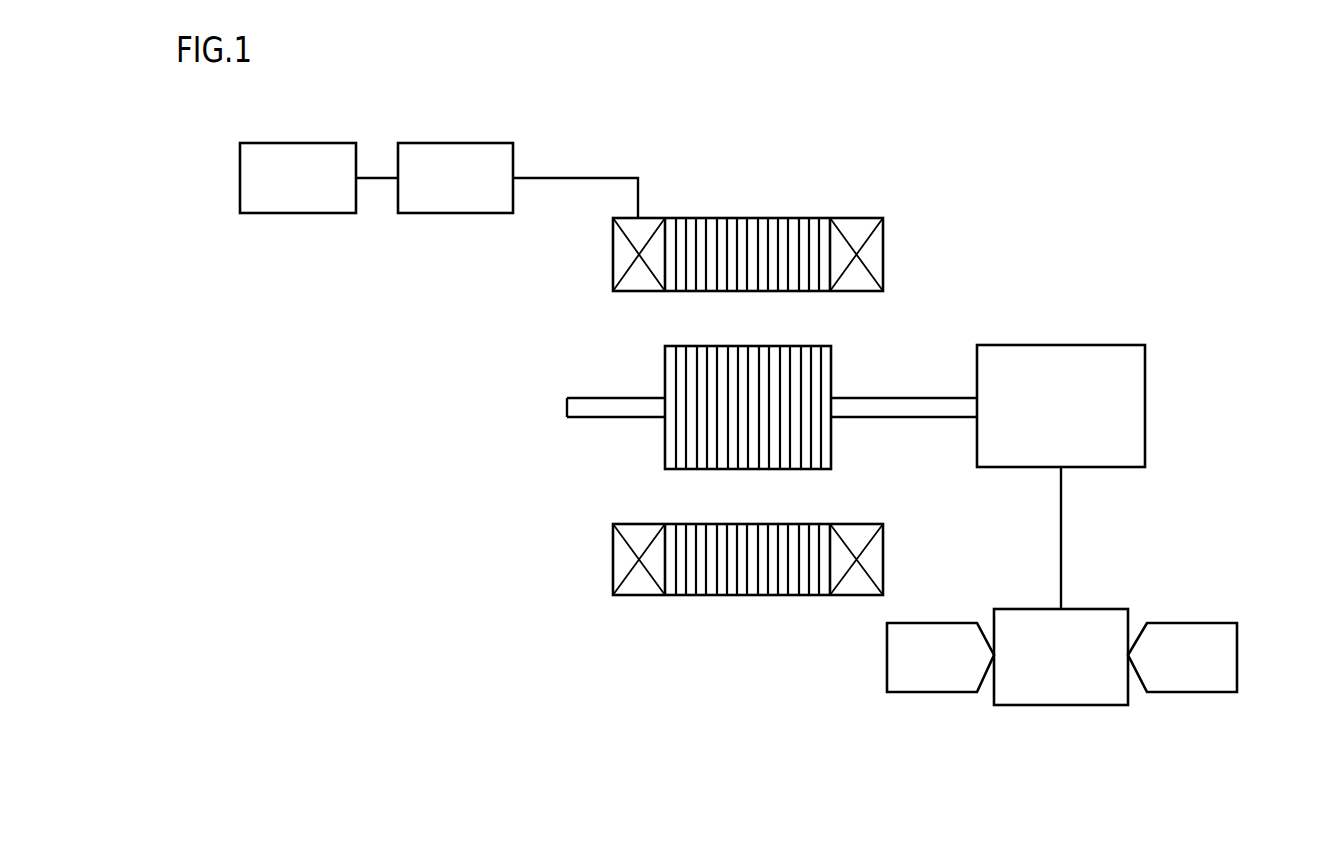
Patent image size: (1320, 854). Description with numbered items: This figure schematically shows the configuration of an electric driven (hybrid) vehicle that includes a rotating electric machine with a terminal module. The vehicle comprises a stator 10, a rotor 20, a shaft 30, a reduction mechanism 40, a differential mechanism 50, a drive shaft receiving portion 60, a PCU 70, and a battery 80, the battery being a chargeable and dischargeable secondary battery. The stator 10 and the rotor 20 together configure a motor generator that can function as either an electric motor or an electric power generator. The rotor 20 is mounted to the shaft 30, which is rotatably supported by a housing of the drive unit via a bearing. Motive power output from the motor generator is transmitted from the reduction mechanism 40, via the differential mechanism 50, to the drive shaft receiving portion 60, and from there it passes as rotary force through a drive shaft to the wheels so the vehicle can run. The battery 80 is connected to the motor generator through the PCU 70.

The stator 10 is at (798, 203).
The rotor 20 is at (832, 363).
The shaft 30 is at (932, 395).
The reduction mechanism 40 is at (1146, 405).
The differential mechanism 50 is at (1061, 706).
The drive shaft receiving portion 60 is at (1182, 693).
The PCU (Power Control Unit) 70 is at (455, 214).
The battery 80 is at (298, 214).